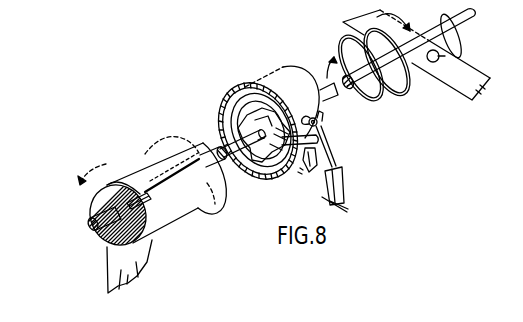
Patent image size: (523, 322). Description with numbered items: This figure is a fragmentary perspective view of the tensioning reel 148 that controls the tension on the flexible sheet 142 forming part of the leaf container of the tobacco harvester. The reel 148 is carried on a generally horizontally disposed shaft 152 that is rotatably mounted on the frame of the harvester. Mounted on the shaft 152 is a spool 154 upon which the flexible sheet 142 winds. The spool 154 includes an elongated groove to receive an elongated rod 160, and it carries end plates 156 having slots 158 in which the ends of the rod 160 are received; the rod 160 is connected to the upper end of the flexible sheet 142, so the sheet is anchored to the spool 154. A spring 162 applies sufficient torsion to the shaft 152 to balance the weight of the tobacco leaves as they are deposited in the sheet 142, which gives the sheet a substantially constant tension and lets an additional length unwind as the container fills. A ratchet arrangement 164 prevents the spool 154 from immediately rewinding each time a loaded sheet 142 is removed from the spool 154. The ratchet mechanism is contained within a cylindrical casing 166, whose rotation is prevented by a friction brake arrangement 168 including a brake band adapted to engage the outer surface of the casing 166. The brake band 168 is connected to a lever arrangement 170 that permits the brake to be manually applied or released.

The flexible sheet 142 is at (107, 282).
The tensioning reel 148 is at (112, 108).
The shaft 152 is at (88, 229).
The spool 154 is at (92, 198).
The end plates 156 is at (201, 210).
The slots 158 is at (210, 171).
The elongated rod 160 is at (206, 147).
The spring 162 is at (405, 85).
The ratchet arrangement 164 is at (246, 126).
The cylindrical casing 166 is at (306, 174).
The friction brake arrangement 168 is at (251, 85).
The lever arrangement 170 is at (333, 168).